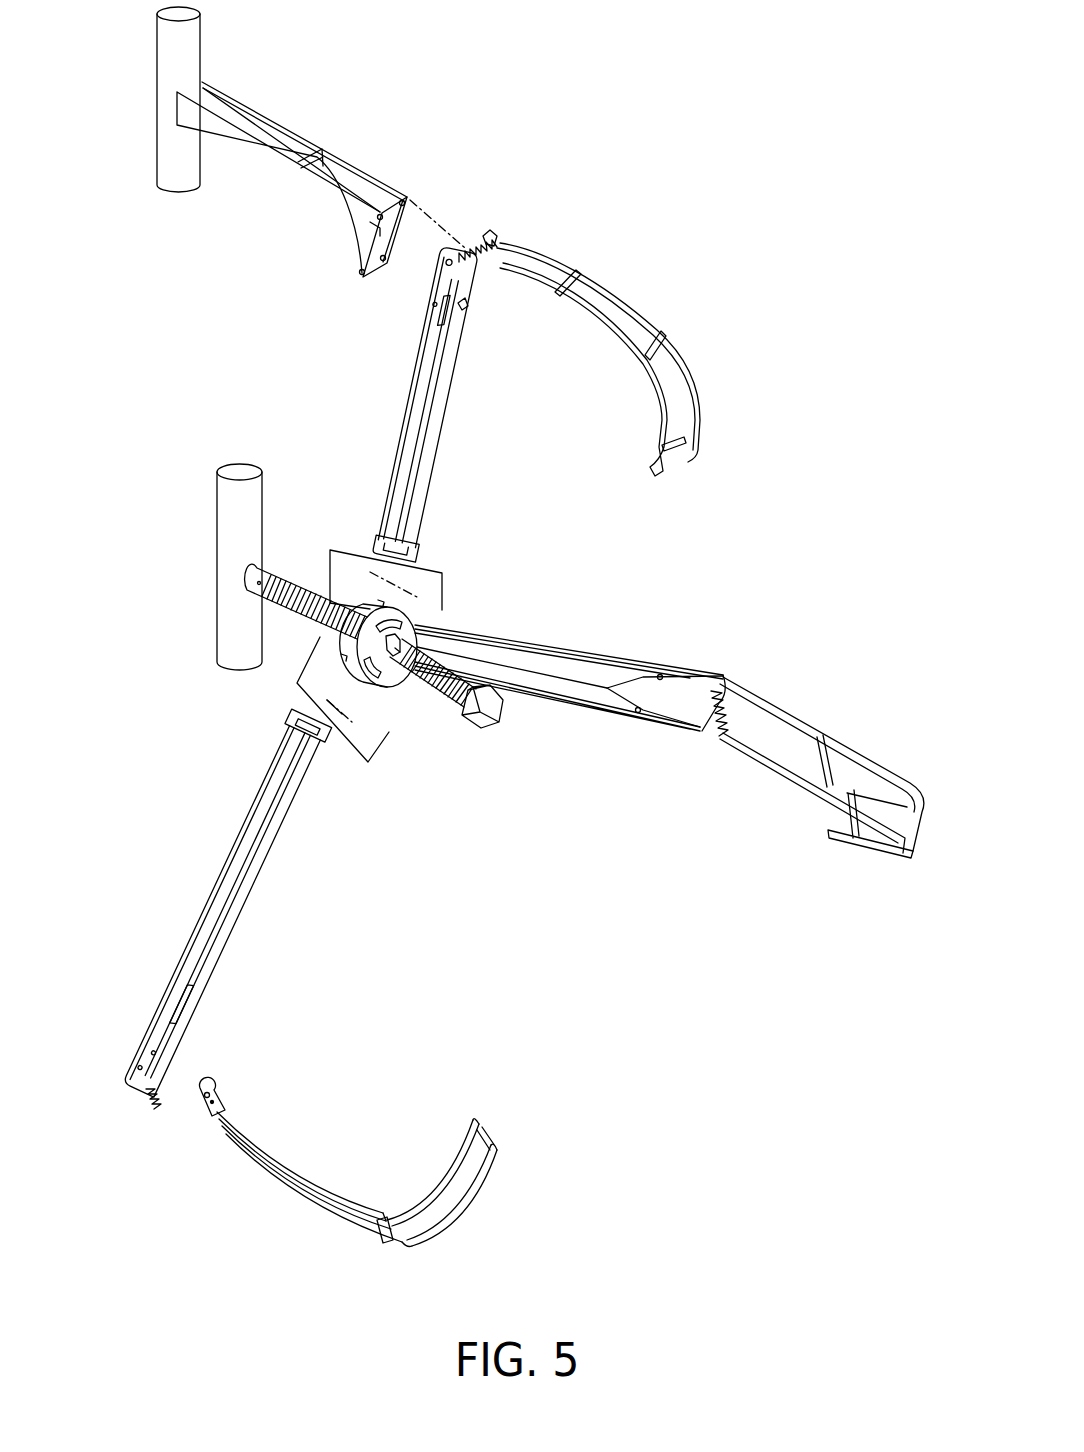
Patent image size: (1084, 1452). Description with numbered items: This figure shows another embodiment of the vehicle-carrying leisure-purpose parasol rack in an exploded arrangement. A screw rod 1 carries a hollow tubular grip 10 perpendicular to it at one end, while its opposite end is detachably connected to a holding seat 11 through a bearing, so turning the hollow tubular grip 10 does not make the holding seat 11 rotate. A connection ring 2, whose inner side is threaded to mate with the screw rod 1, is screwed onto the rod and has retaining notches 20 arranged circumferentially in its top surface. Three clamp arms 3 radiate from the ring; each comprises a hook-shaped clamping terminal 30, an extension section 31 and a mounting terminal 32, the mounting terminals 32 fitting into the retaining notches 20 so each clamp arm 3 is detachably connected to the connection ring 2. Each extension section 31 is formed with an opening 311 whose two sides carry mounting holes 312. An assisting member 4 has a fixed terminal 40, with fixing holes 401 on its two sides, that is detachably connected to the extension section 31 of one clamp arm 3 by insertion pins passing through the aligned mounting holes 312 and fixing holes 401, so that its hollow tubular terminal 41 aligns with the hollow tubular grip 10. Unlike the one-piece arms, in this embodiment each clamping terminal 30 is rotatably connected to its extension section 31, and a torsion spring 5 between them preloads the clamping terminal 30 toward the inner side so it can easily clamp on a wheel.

The screw rod 1 is at (249, 615).
The hollow tubular grip 10 is at (181, 561).
The holding seat 11 is at (446, 736).
The connection ring 2 is at (299, 616).
The retaining notches 20 is at (333, 616).
The clamp arms 3 is at (499, 705).
The clamping terminal 30 is at (562, 745).
The extension section 31 is at (415, 622).
The opening 311 is at (415, 619).
The mounting holes 312 is at (544, 266).
The mounting terminal 32 is at (403, 666).
The assisting member 4 is at (341, 138).
The fixed terminal 40 is at (304, 128).
The fixing holes 401 is at (363, 197).
The hollow tubular terminal 41 is at (167, 159).
The torsion spring 5 is at (443, 624).